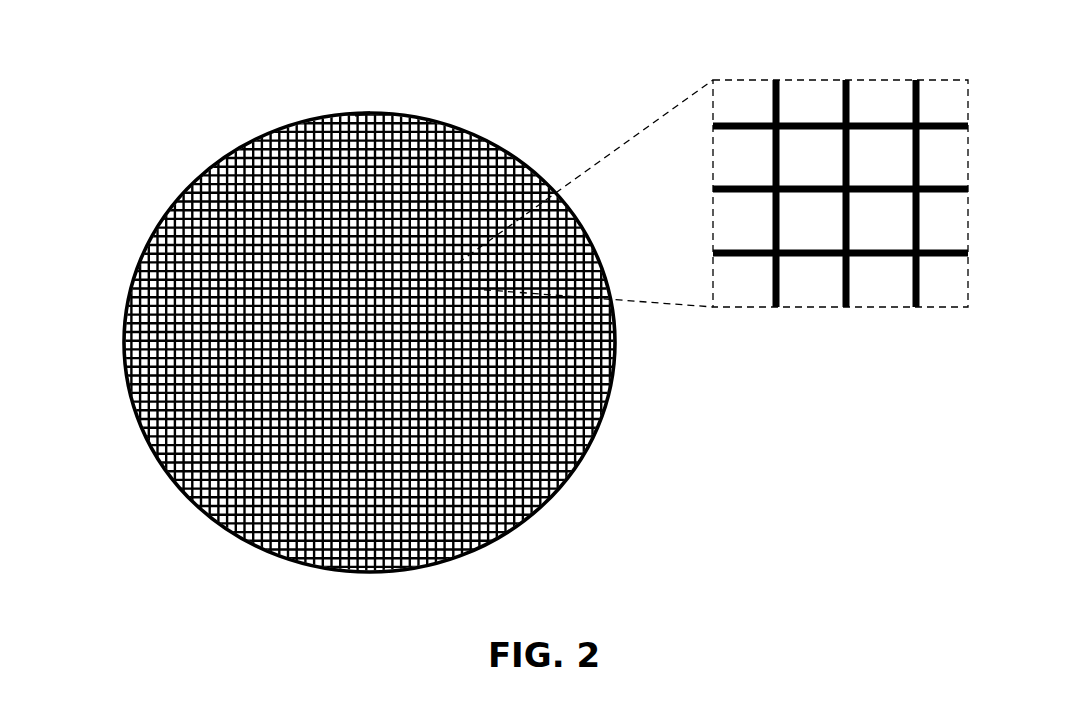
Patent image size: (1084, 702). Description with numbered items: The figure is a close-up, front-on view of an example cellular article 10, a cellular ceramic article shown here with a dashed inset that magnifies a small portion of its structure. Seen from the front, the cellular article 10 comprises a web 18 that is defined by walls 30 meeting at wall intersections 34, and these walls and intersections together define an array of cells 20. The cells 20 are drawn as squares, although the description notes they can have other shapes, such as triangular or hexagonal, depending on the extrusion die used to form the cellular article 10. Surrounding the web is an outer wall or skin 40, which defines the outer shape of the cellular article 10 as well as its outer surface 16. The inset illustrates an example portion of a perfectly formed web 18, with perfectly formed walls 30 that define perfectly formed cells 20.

The cellular article 10 is at (510, 293).
The outer surface 16 is at (606, 348).
The web 18 is at (186, 220).
The cells 20 is at (808, 95).
The walls 30 is at (740, 116).
The wall intersections 34 is at (762, 133).
The outer wall or skin 40 is at (357, 105).